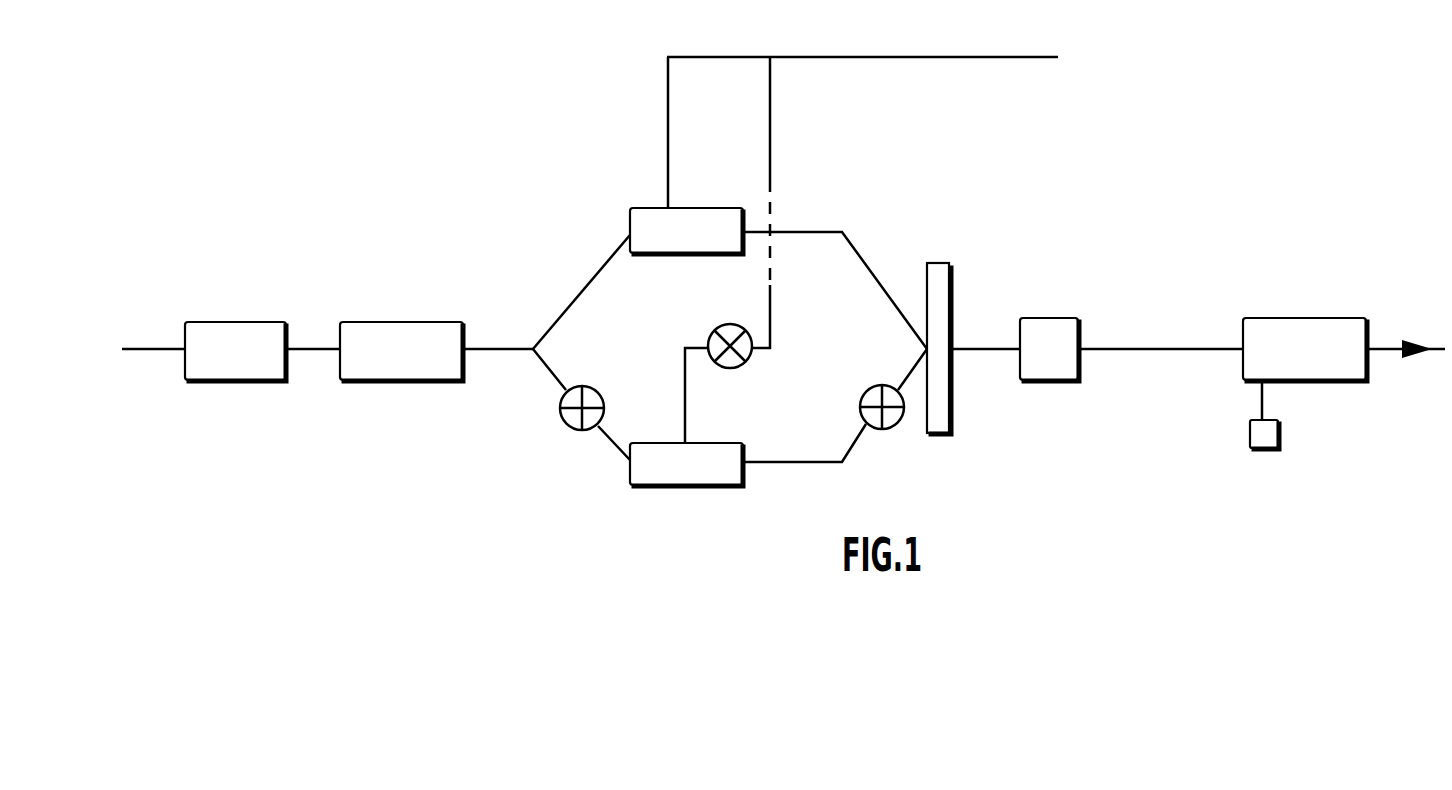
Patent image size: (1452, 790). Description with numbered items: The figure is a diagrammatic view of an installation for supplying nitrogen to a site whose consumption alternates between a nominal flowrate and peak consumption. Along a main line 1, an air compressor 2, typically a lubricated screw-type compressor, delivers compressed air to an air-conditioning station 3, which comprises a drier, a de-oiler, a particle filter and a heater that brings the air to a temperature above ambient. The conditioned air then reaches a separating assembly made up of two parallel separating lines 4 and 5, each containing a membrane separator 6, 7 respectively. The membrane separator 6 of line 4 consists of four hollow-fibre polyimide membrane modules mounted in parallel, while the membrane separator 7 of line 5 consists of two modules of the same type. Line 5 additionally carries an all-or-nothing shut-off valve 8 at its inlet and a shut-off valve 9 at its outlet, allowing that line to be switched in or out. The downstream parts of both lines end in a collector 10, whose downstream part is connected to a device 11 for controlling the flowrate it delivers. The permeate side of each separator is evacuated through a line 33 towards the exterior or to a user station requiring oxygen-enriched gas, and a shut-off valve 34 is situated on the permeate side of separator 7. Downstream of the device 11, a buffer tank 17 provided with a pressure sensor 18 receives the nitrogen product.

The main line 1 is at (146, 346).
The air compressor 2 is at (222, 322).
The air-conditioning station 3 is at (410, 322).
The separating line 4 is at (878, 278).
The separating line 5 is at (805, 460).
The membrane separator 6 is at (686, 209).
The membrane separator 7 is at (684, 487).
The shut-off valve 8 is at (598, 388).
The shut-off valve 9 is at (897, 430).
The collector 10 is at (946, 263).
The device for controlling the flowrate 11 is at (1062, 384).
The buffer tank 17 is at (1318, 318).
The pressure sensor 18 is at (1250, 436).
The line 33 is at (878, 57).
The shut-off valve 34 is at (730, 326).